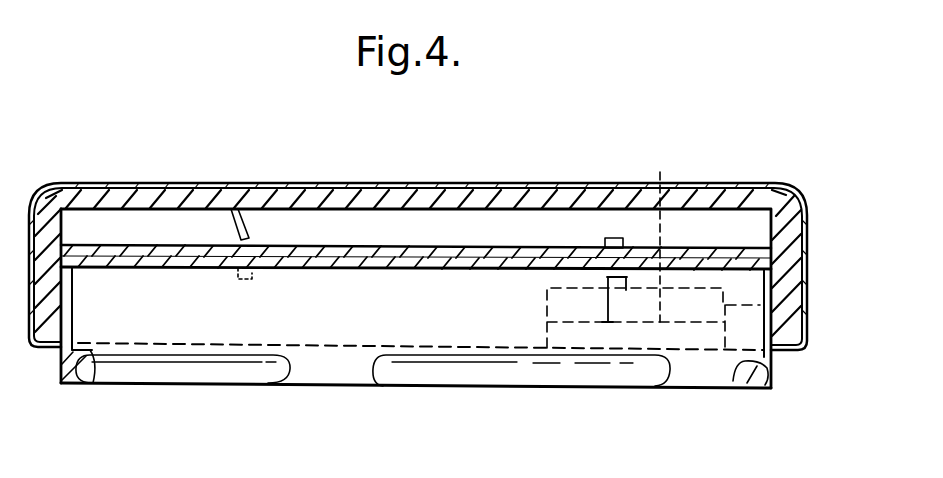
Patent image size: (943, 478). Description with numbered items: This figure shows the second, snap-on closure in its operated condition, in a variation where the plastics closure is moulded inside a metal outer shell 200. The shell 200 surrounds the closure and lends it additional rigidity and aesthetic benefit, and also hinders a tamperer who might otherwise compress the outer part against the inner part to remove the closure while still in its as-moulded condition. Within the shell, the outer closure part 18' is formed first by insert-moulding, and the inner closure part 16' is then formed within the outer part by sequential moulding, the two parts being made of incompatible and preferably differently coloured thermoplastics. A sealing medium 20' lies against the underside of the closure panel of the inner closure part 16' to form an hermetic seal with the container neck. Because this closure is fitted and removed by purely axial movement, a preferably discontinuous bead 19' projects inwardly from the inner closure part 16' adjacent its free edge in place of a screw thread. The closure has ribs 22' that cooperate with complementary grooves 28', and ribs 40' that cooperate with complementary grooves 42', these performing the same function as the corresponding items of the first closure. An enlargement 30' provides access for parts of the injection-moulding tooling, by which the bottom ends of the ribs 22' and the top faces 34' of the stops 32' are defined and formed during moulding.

The metal outer shell 200 is at (188, 180).
The outer closure part 18' is at (403, 263).
The inner closure part 16' is at (416, 206).
The sealing medium 20' is at (418, 312).
The bead 19' is at (102, 399).
The rib 40' is at (285, 228).
The groove 42' is at (289, 295).
The groove 28' is at (572, 199).
The top face of stop 34' is at (667, 236).
The rib 22' is at (616, 312).
The enlargement 30' is at (816, 289).
The stop 32' is at (416, 394).